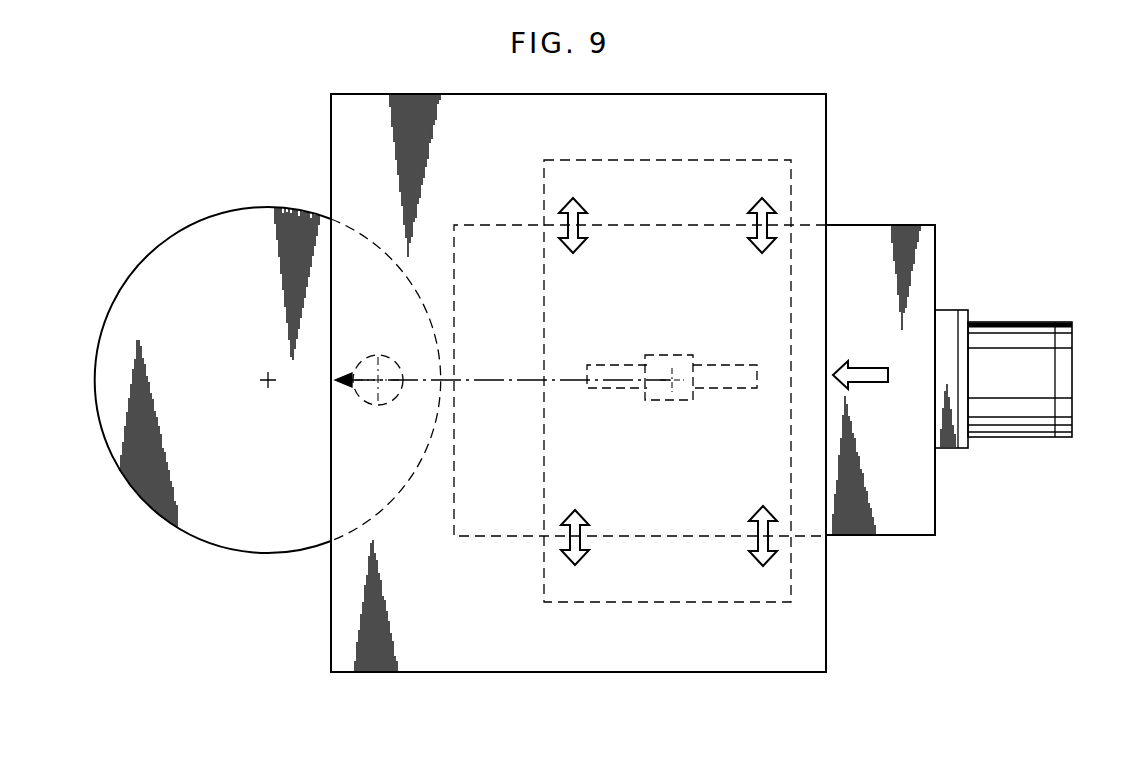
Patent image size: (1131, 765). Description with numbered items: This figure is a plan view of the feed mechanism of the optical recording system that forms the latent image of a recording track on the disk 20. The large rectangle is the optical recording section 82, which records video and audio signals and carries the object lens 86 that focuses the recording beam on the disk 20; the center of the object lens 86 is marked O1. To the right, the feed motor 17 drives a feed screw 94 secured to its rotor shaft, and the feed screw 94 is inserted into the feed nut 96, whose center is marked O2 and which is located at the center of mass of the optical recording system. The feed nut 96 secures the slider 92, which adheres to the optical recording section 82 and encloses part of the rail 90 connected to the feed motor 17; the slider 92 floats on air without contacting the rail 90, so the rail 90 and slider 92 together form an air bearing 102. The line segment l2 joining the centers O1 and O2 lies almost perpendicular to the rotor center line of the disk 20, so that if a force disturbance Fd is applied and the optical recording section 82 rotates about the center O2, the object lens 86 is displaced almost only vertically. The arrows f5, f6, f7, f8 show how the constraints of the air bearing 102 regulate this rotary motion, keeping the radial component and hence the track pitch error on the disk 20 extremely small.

The feed motor 17 is at (1028, 327).
The disk 20 is at (162, 258).
The optical recording section 82 is at (655, 663).
The object lens 86 is at (390, 398).
The rail 90 is at (868, 237).
The slider 92 is at (745, 160).
The feed screw 94 is at (725, 388).
The feed nut 96 is at (678, 400).
The air bearing 102 is at (956, 290).
The center of the object lens O1 is at (387, 362).
The center of the feed nut O2 is at (672, 378).
The line segment l2 is at (497, 377).
The arrow f5 is at (583, 208).
The arrow f6 is at (748, 210).
The arrow f7 is at (583, 517).
The arrow f8 is at (752, 510).
The force disturbance Fd is at (867, 368).